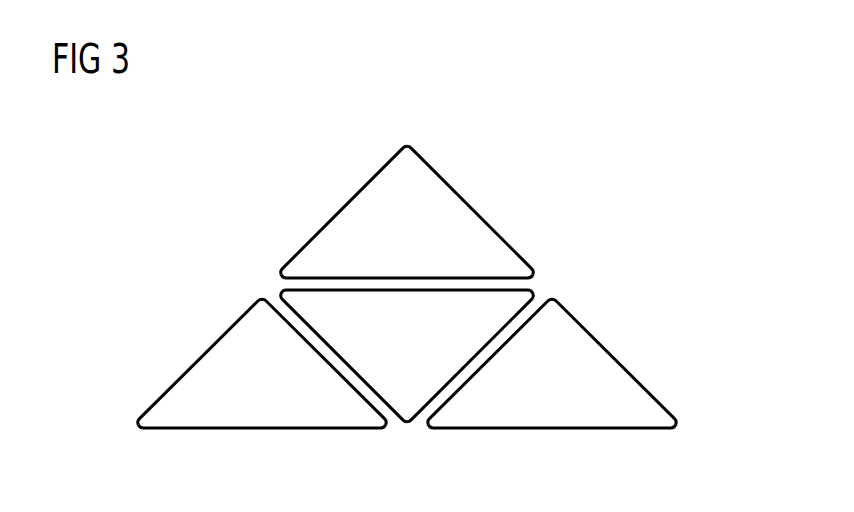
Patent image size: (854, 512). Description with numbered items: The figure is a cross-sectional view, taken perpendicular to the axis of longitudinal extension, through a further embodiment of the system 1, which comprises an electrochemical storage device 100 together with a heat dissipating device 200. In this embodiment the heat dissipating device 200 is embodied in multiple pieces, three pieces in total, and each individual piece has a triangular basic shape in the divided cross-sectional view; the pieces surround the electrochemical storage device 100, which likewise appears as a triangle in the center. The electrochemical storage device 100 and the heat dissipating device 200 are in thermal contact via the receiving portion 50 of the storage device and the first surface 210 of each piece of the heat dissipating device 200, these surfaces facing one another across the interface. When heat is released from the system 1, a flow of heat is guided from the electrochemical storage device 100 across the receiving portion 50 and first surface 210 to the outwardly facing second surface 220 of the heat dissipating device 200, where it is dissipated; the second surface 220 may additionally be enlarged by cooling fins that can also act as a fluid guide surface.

The system 1 is at (692, 133).
The receiving portion 50 is at (360, 291).
The electrochemical storage device 100 is at (407, 414).
The heat dissipating device 200 is at (388, 188).
The first surface 210 is at (406, 279).
The second surface 220 is at (318, 229).